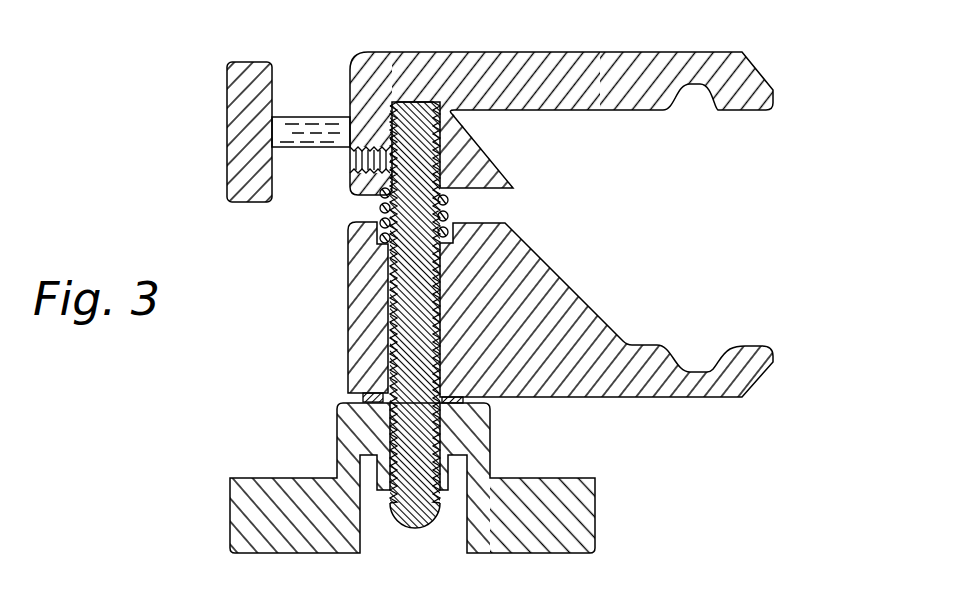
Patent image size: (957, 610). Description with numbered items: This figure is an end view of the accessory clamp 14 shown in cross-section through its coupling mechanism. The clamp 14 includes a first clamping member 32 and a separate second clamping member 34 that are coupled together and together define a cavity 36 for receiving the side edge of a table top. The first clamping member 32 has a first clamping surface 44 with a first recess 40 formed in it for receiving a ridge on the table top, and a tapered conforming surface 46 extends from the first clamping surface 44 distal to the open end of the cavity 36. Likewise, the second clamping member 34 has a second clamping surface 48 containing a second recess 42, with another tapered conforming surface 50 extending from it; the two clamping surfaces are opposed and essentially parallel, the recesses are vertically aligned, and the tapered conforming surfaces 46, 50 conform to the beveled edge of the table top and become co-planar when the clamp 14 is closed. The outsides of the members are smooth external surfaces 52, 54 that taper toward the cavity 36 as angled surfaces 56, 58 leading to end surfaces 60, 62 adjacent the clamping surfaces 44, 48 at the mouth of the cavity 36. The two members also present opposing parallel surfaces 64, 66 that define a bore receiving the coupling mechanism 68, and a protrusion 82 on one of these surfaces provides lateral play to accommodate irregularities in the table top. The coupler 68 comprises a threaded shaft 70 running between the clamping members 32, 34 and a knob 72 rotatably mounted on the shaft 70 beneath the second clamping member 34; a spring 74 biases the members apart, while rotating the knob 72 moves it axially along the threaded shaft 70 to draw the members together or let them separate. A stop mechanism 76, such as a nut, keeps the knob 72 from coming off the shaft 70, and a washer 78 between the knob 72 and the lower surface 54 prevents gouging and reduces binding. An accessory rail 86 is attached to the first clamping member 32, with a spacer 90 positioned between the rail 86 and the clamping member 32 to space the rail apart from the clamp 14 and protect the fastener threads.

The accessory clamp 14 is at (245, 335).
The first clamping member 32 is at (564, 112).
The second clamping member 34 is at (597, 335).
The cavity 36 is at (620, 237).
The first recess 40 is at (707, 100).
The second recess 42 is at (710, 363).
The first clamping surface 44 is at (620, 112).
The tapered conforming surface 46 is at (490, 140).
The second clamping surface 48 is at (645, 340).
The tapered conforming surface 50 is at (593, 312).
The external surface 52 is at (658, 52).
The external surface 54 is at (673, 402).
The angled surface 56 is at (773, 55).
The angled surface 58 is at (757, 390).
The end surface 60 is at (777, 98).
The end surface 62 is at (773, 353).
The opposing parallel surface 64 is at (502, 190).
The opposing parallel surface 66 is at (468, 210).
The coupling mechanism 68 is at (351, 343).
The threaded shaft 70 is at (413, 352).
The knob 72 is at (583, 527).
The spring 74 is at (380, 208).
The stop mechanism 76 is at (422, 527).
The washer 78 is at (378, 407).
The protrusion 82 is at (350, 197).
The accessory rail 86 is at (250, 63).
The spacer 90 is at (308, 117).